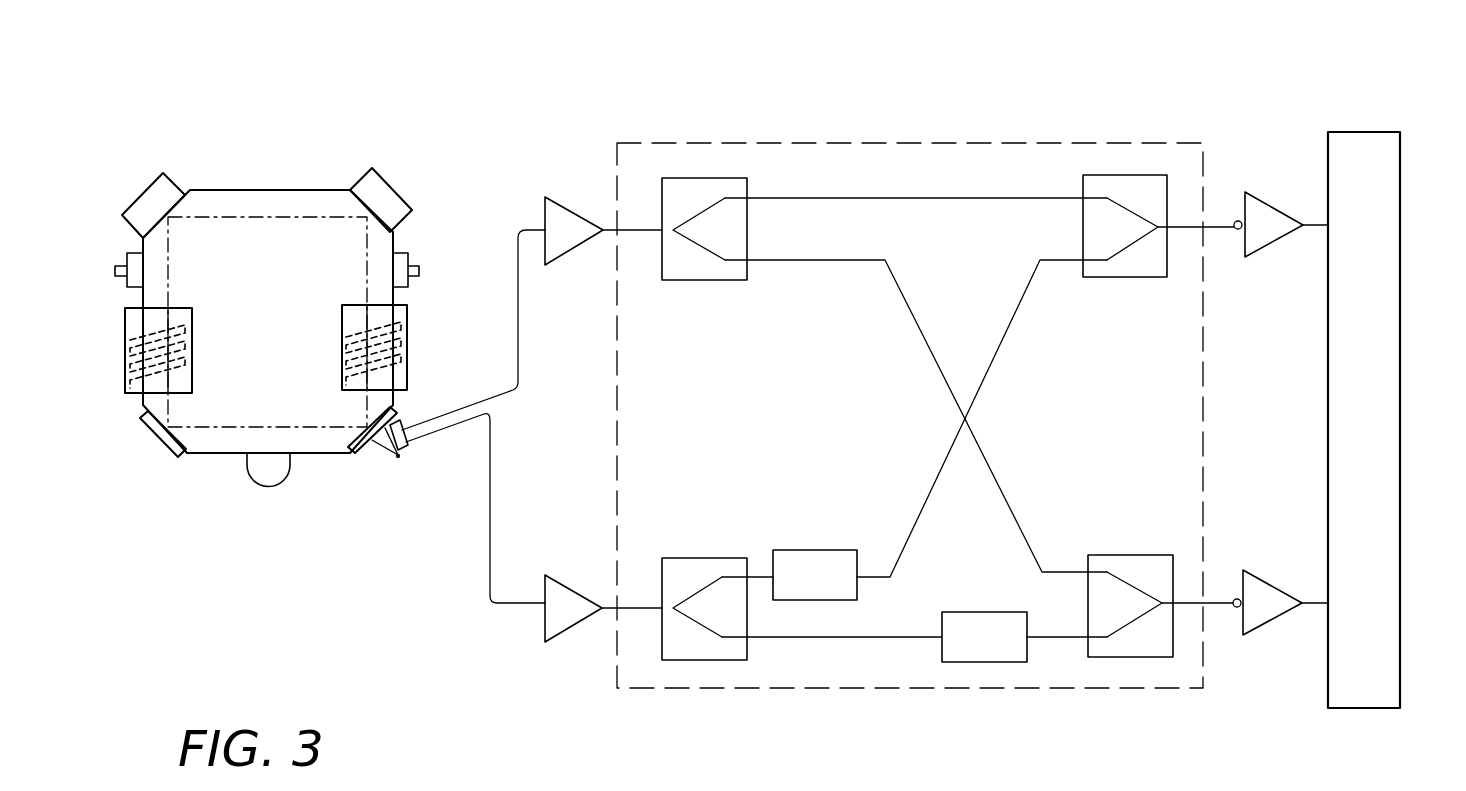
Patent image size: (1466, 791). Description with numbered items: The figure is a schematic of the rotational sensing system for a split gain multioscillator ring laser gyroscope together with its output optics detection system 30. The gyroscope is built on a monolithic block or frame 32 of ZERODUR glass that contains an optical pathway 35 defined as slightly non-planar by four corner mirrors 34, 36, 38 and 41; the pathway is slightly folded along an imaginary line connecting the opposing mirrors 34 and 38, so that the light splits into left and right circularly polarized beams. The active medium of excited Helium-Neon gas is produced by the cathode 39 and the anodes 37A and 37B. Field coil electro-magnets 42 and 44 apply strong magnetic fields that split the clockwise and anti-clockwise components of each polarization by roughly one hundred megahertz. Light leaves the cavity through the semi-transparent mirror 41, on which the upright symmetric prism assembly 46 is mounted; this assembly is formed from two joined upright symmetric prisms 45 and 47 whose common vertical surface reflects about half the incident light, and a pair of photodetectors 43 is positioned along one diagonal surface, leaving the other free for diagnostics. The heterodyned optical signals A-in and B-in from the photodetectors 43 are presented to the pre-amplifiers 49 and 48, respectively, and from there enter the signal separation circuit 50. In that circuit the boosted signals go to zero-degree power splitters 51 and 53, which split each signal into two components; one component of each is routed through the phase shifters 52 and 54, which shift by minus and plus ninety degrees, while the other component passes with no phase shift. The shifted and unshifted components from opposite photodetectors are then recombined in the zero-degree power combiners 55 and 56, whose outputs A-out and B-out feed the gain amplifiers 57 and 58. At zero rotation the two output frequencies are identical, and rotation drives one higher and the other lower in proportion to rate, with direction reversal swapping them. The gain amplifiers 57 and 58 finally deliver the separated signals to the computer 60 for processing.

The output optics detection system 30 is at (940, 128).
The monolithic block or frame 32 is at (313, 190).
The corner mirror 34 is at (395, 188).
The optical pathway 35 is at (230, 218).
The corner mirror 36 is at (172, 178).
The anode 37A is at (419, 272).
The anode 37B is at (128, 287).
The corner mirror 38 is at (163, 440).
The cathode 39 is at (275, 487).
The semi-transparent mirror 41 is at (353, 451).
The field coil electro-magnet 42 is at (193, 350).
The photodetectors 43 is at (409, 447).
The field coil electro-magnet 44 is at (407, 335).
The upright symmetric prism 45 is at (373, 447).
The upright symmetric prism assembly 46 is at (398, 456).
The upright symmetric prism 47 is at (400, 418).
The pre-amplifier 48 is at (575, 578).
The pre-amplifier 49 is at (586, 214).
The signal separation circuit 50 is at (837, 688).
The 0° power splitter 51 is at (722, 280).
The phase shifter 52 is at (832, 550).
The 0° power splitter 53 is at (705, 558).
The phase shifter 54 is at (973, 612).
The 0° power combiner 55 is at (1098, 277).
The 0° power combiner 56 is at (1143, 555).
The gain amplifier 57 is at (1270, 245).
The gain amplifier 58 is at (1266, 585).
The computer 60 is at (1400, 225).